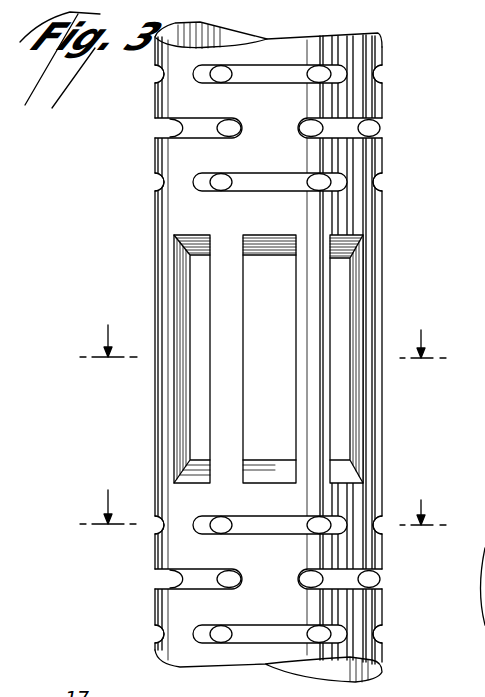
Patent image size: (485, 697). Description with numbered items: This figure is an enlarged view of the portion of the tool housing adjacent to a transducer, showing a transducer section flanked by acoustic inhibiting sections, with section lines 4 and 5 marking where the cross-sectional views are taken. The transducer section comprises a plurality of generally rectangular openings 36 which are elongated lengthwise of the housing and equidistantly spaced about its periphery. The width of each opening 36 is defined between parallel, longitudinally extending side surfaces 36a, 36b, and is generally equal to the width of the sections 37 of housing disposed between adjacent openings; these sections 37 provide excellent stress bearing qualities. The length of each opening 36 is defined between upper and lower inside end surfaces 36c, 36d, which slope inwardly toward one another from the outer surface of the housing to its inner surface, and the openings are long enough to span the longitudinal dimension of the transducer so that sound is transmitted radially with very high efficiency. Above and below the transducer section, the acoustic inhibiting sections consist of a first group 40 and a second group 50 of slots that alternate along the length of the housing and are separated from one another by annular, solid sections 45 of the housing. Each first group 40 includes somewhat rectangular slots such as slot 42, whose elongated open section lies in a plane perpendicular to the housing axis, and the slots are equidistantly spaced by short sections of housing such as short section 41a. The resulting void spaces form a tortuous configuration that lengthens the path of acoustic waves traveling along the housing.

The opening 36 is at (355, 409).
The side surface 36a is at (269, 359).
The side surface 36b is at (260, 385).
The upper inside end surface 36c is at (258, 251).
The lower inside end surface 36d is at (264, 468).
The section of housing 37 is at (305, 322).
The first group of slots 40 is at (381, 527).
The annular solid section 45 is at (366, 556).
The second group of slots 50 is at (381, 579).
The slot 42 is at (475, 503).
The short section of housing 41a is at (484, 642).
The section line 4- 4 is at (263, 318).
The section line 5- 5 is at (263, 484).